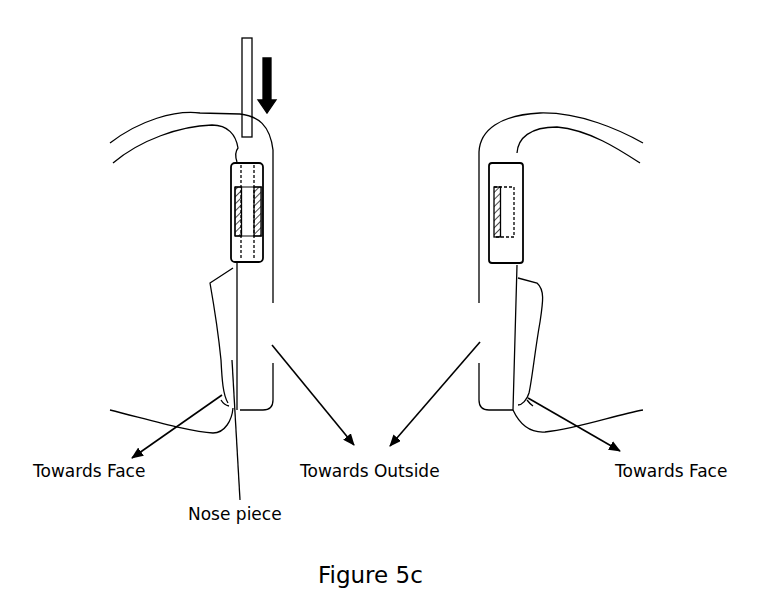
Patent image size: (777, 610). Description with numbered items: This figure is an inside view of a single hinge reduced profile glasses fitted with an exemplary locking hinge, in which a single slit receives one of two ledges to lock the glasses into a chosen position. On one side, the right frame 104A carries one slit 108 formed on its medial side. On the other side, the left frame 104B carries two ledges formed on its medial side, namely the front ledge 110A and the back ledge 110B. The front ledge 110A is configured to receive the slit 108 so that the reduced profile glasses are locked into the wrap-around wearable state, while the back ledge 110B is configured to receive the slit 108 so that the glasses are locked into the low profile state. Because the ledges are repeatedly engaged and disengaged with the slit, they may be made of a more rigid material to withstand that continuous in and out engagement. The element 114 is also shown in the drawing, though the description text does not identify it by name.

The right frame 104A is at (514, 177).
The left frame 104B is at (230, 178).
The slit 108 is at (493, 198).
The front ledge 110A is at (262, 210).
The back ledge 110B is at (235, 217).
The pillar 114 is at (253, 50).